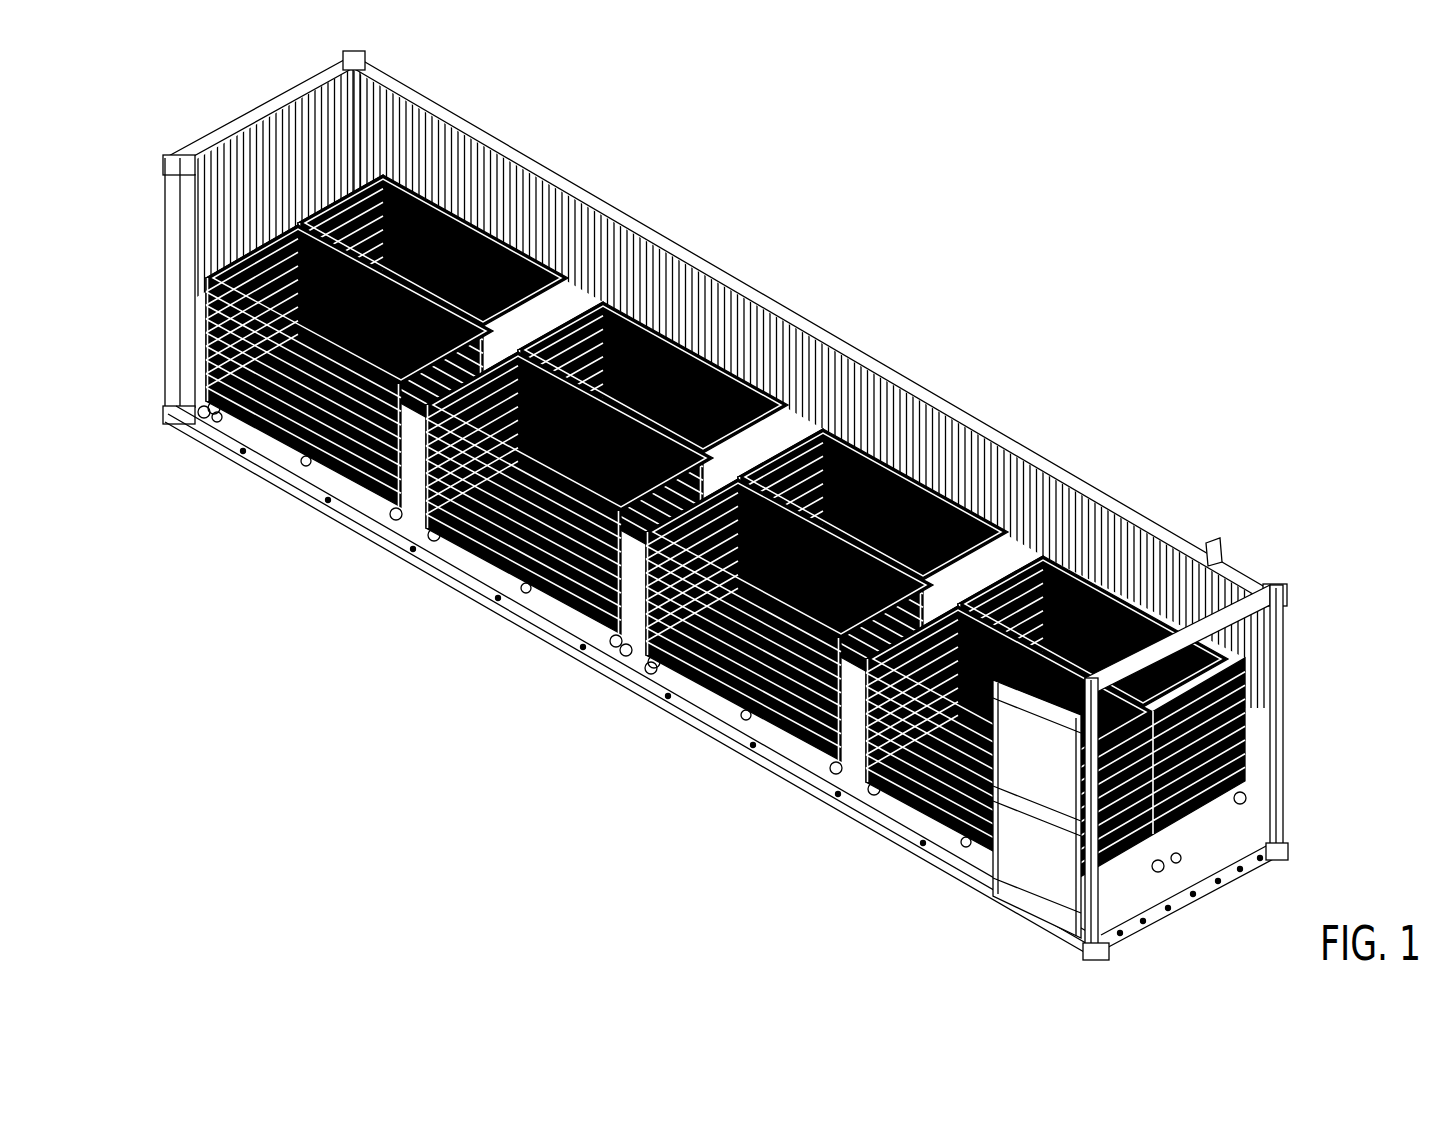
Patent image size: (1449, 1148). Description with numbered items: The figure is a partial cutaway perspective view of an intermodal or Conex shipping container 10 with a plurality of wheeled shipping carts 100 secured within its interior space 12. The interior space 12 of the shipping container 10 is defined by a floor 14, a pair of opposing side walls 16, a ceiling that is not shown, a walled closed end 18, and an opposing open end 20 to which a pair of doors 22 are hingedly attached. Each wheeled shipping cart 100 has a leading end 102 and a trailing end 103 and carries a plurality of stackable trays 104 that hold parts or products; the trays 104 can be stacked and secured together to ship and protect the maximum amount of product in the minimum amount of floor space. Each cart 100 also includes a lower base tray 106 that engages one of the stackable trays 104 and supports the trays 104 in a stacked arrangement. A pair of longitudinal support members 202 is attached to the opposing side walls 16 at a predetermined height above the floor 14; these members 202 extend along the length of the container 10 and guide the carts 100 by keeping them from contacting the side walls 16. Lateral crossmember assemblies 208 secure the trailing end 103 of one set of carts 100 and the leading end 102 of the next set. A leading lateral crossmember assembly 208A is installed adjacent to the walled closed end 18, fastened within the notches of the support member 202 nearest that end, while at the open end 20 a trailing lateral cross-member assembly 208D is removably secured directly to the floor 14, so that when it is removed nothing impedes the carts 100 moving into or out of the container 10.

The intermodal shipping container 10 is at (545, 128).
The interior space 12 is at (772, 330).
The floor 14 is at (1118, 882).
The side walls 16 is at (935, 430).
The walled closed end 18 is at (250, 168).
The open end 20 is at (1235, 638).
The doors 22 is at (1208, 538).
The wheeled shipping carts 100 is at (665, 294).
The leading end 102 is at (345, 170).
The trailing end 103 is at (405, 497).
The stackable trays 104 is at (405, 185).
The lower base tray 106 is at (268, 420).
The longitudinal support members 202 is at (485, 560).
The lateral crossmember assemblies 208 is at (613, 650).
The leading lateral crossmember assembly 208A is at (192, 393).
The trailing lateral cross-member assembly 208D is at (1245, 795).